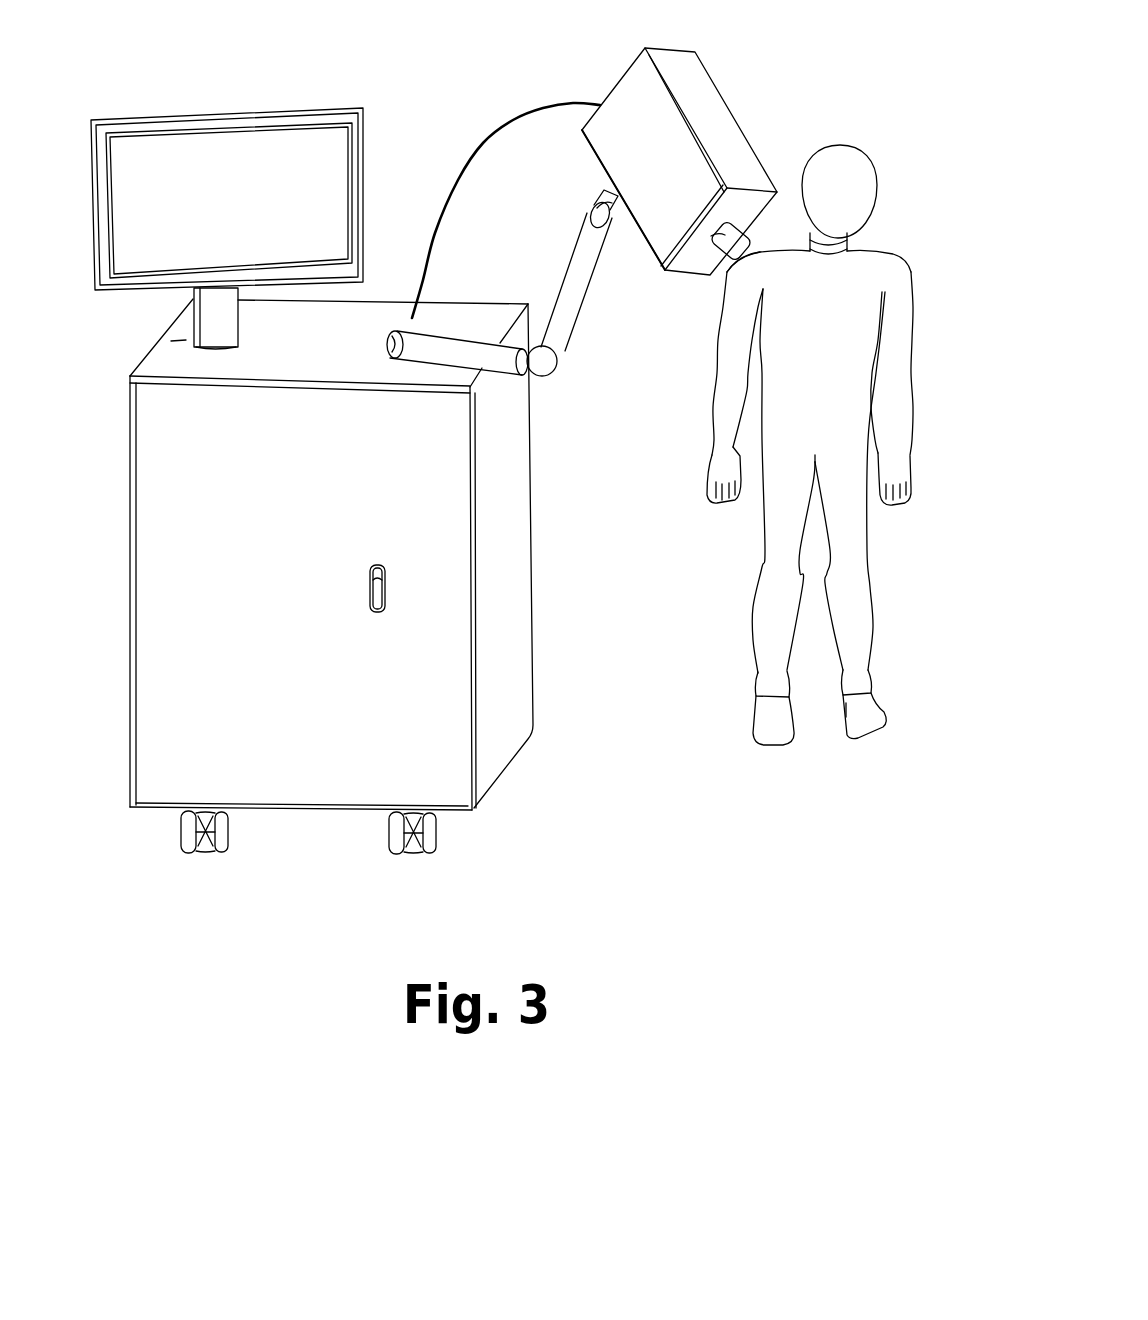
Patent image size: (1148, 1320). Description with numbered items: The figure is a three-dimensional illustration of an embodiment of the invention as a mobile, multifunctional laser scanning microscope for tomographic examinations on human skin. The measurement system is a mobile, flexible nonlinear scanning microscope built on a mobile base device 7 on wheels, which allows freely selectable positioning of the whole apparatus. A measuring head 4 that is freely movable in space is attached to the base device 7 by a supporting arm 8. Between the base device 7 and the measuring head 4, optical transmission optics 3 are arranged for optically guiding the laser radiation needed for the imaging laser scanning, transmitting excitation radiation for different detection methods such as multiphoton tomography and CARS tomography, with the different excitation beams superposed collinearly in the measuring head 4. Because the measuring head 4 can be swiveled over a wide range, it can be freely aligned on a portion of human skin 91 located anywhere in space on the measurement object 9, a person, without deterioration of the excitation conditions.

The optical transmission optics 3 is at (497, 135).
The measuring head 4 is at (633, 92).
The mobile base device 7 is at (515, 635).
The supporting arm 8 is at (575, 268).
The measurement object 9 is at (859, 130).
The portion of human skin 91 is at (725, 290).